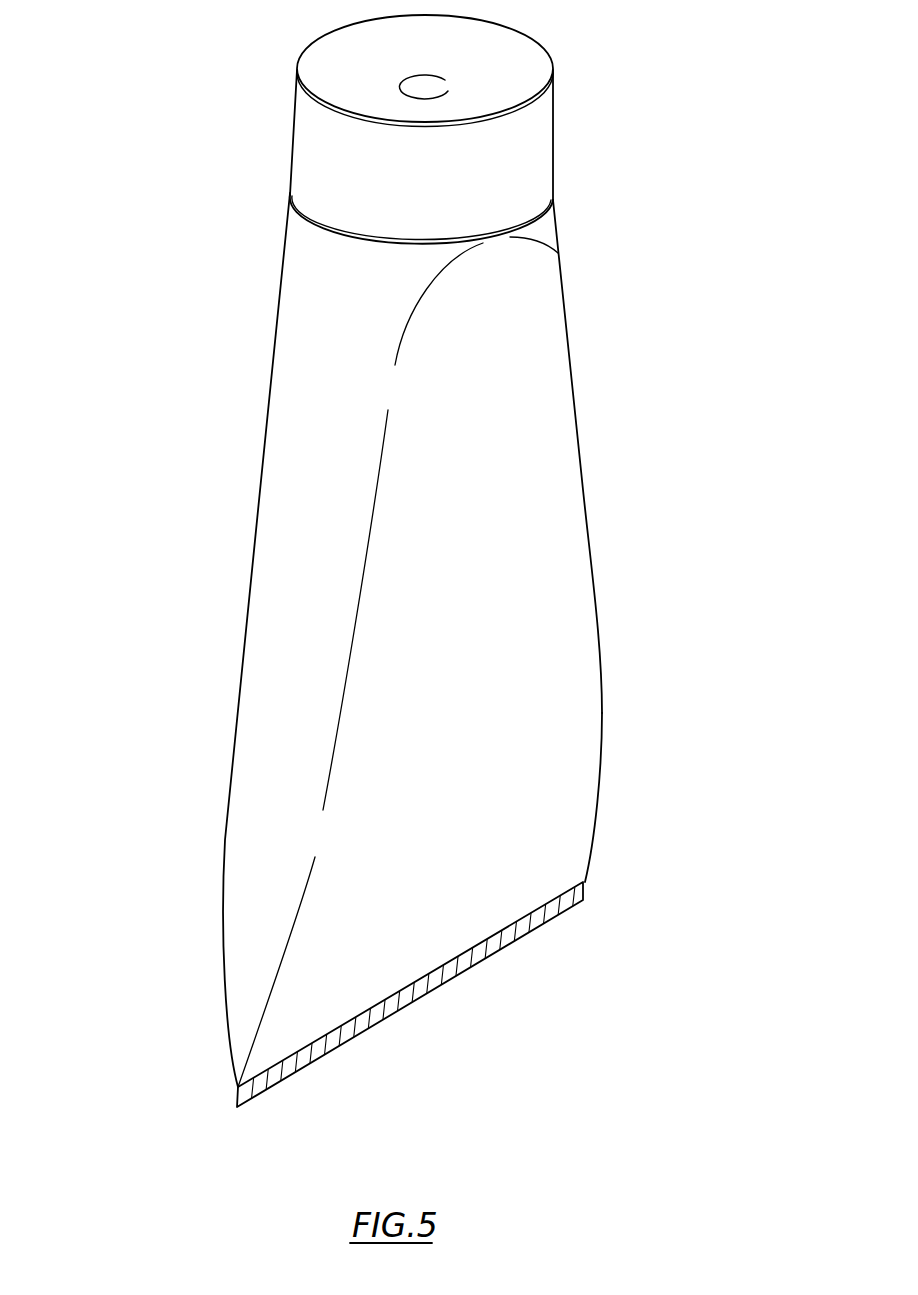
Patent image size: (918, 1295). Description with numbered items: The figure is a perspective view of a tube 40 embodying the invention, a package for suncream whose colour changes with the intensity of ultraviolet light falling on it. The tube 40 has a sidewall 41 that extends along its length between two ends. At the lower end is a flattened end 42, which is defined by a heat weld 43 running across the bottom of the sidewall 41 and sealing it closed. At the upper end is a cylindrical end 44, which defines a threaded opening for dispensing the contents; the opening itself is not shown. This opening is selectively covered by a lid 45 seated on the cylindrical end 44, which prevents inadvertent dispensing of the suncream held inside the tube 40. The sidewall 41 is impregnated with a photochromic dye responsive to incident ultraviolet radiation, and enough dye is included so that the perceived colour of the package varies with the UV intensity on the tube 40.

The tube 40 is at (172, 688).
The sidewall 41 is at (310, 464).
The flattened end 42 is at (467, 877).
The heat weld 43 is at (385, 1017).
The cylindrical end 44 is at (558, 197).
The lid 45 is at (493, 52).